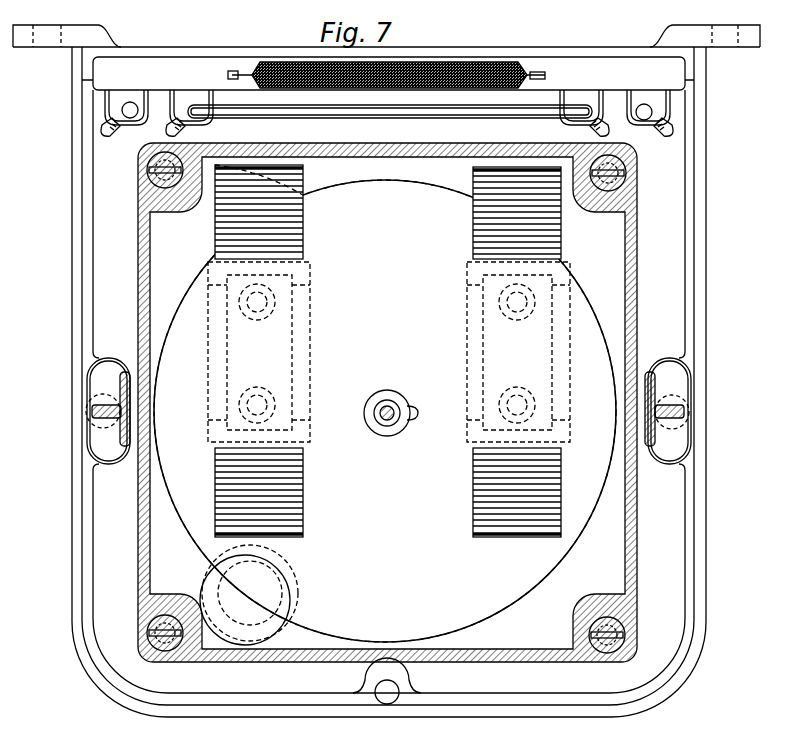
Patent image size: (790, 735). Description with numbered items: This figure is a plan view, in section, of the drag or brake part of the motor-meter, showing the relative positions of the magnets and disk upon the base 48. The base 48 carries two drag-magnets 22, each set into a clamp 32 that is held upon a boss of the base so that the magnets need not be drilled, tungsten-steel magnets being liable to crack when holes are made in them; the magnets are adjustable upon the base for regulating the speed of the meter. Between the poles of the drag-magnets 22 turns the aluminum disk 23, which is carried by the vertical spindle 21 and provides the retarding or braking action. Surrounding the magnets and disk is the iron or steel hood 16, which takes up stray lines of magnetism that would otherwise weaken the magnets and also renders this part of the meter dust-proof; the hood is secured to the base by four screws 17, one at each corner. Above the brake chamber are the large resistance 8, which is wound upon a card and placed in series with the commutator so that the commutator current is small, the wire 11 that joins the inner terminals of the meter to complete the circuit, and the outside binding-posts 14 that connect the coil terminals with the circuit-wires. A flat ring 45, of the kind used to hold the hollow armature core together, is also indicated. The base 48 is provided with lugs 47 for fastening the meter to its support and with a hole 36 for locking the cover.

The resistance 8 is at (461, 76).
The wire 11 is at (478, 111).
The binding-posts 14 is at (185, 108).
The hood 16 is at (143, 249).
The screws 17 is at (151, 165).
The spindle 21 is at (389, 407).
The drag-magnets 22 is at (492, 240).
The aluminum disk 23 is at (498, 601).
The clamps 32 is at (389, 352).
The hole 36 is at (393, 689).
The flat ring 45 is at (216, 622).
The lugs 47 is at (53, 37).
The base 48 is at (668, 547).